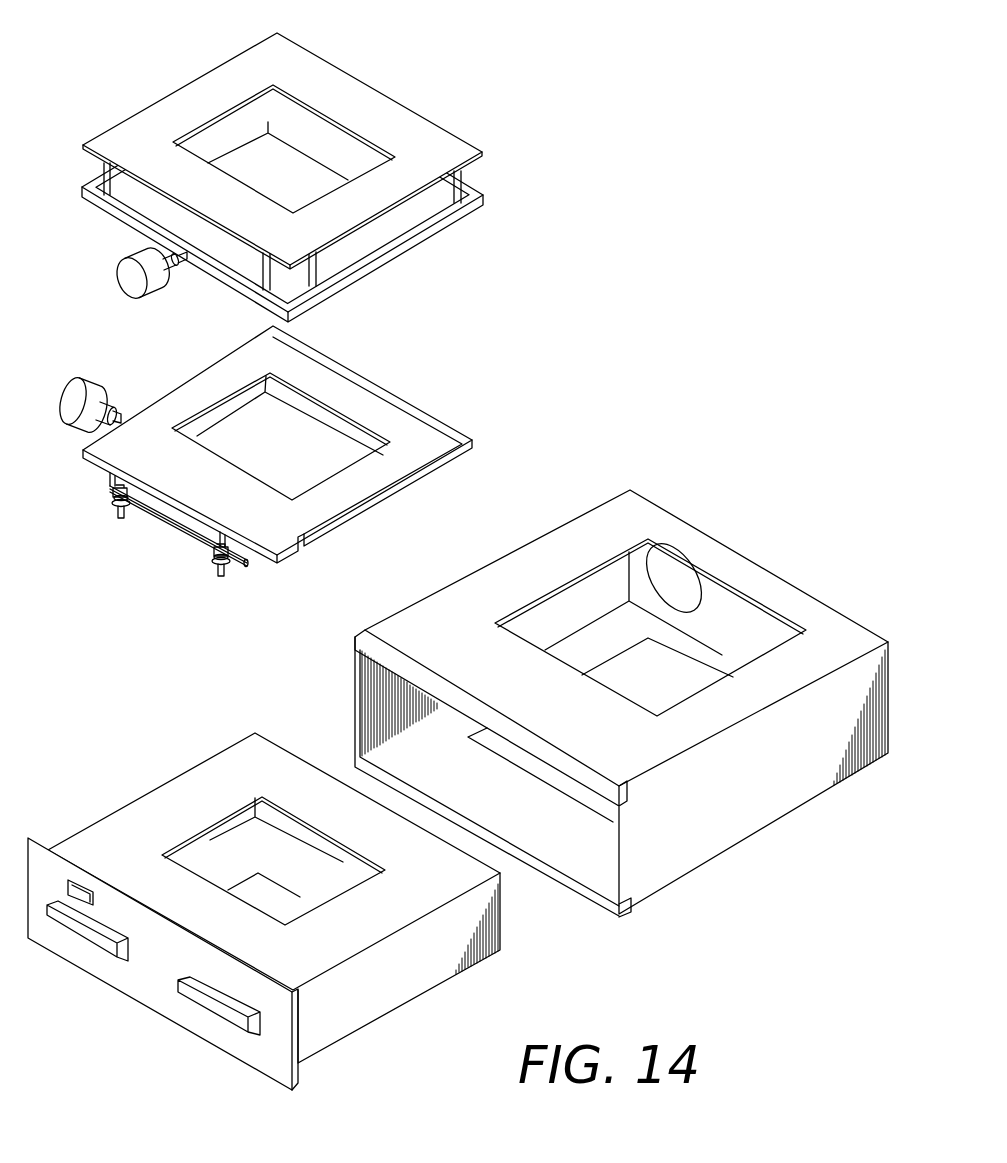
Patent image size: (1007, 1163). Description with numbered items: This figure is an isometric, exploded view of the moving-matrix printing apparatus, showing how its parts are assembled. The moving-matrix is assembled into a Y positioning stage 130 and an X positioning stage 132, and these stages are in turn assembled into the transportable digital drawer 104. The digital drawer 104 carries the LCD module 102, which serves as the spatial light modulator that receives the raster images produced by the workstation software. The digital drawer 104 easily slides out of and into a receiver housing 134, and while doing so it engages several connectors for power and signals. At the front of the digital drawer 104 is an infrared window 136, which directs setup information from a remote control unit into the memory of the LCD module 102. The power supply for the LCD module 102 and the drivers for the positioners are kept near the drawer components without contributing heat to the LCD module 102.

The LCD module 102 is at (355, 102).
The Y positioning stage 130 is at (430, 233).
The X positioning stage 132 is at (380, 415).
The receiver housing 134 is at (704, 550).
The digital drawer 104 is at (192, 795).
The infrared window 136 is at (68, 882).